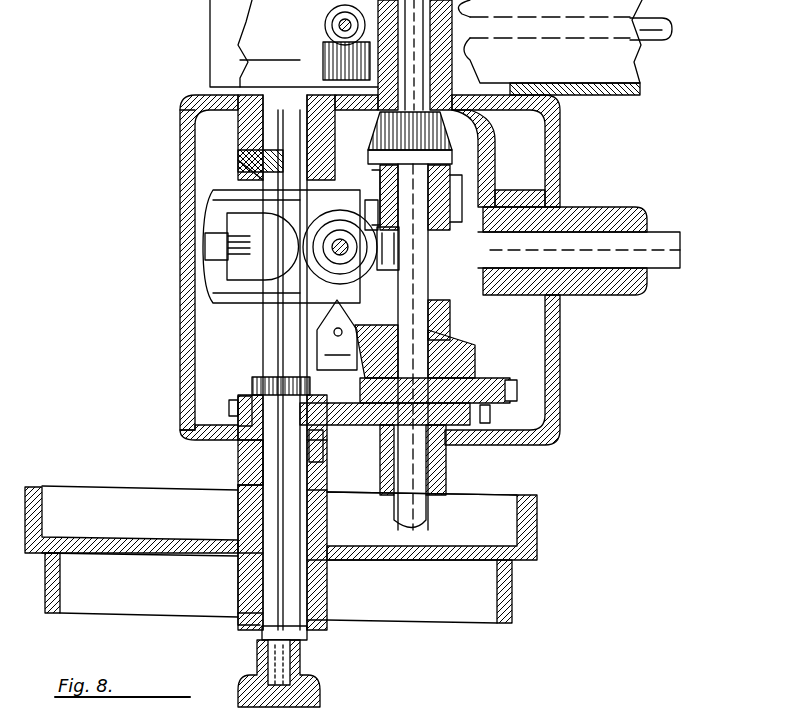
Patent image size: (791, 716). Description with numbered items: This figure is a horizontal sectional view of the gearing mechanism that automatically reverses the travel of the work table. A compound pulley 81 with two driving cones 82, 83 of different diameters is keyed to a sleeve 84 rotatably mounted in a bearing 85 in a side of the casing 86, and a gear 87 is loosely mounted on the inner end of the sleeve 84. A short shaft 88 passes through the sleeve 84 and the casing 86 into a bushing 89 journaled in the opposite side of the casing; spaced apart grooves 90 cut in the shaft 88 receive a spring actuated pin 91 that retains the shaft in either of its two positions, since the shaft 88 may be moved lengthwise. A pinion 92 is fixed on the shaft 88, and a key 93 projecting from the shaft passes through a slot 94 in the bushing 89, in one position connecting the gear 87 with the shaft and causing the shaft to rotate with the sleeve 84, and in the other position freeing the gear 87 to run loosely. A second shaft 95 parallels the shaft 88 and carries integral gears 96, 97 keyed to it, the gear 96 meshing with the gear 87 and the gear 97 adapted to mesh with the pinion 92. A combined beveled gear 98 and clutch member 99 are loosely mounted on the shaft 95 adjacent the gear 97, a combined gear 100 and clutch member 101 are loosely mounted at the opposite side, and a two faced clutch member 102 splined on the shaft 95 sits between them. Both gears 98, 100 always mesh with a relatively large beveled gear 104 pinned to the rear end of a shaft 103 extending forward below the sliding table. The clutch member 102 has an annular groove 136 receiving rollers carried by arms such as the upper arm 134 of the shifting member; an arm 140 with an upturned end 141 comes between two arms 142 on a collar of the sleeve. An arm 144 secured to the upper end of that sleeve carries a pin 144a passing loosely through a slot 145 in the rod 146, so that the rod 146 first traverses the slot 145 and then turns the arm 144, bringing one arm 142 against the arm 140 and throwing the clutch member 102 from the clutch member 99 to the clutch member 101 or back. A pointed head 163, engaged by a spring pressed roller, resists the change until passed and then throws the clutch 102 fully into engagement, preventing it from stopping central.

The pulley 81 is at (330, 565).
The driving cone 82 is at (540, 530).
The driving cone 83 is at (515, 598).
The sleeve 84 is at (240, 585).
The bearing 85 is at (240, 476).
The casing 86 is at (258, 385).
The gear 87 is at (232, 412).
The short shaft 88 is at (310, 632).
The bushing 89 is at (258, 128).
The grooves 90 is at (260, 158).
The spring actuated pin 91 is at (243, 168).
The pinion 92 is at (255, 378).
The key 93 is at (318, 445).
The slot 94 is at (322, 482).
The second shaft 95 is at (432, 458).
The gear 96 is at (488, 412).
The gear 97 is at (518, 390).
The beveled gear 98 is at (458, 368).
The clutch member 99 is at (480, 305).
The gear 100 is at (452, 140).
The clutch member 101 is at (450, 178).
The two faced clutch member 102 is at (455, 232).
The shaft 103 is at (618, 262).
The beveled gear 104 is at (492, 300).
The upper arm 134 is at (368, 200).
The annular groove 136 is at (522, 225).
The arm 140 is at (245, 300).
The upturned end 141 is at (210, 250).
The arms 142 is at (232, 198).
The arm 144 is at (323, 58).
The pin 144a is at (335, 20).
The slot 145 is at (325, 22).
The rod 146 is at (657, 42).
The head 163 is at (318, 360).